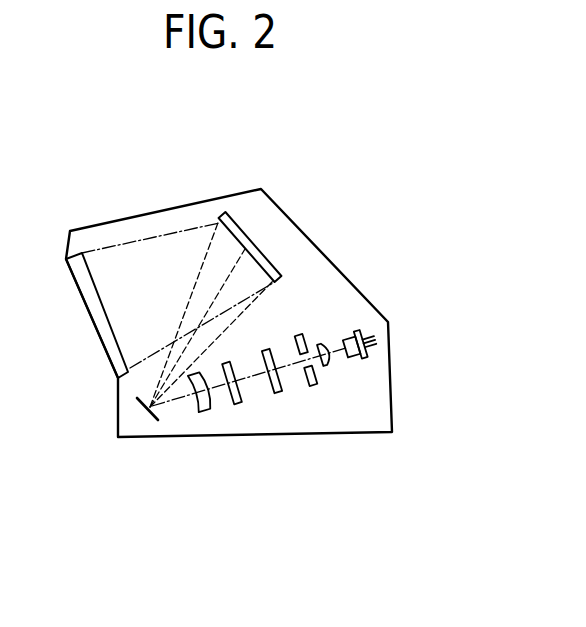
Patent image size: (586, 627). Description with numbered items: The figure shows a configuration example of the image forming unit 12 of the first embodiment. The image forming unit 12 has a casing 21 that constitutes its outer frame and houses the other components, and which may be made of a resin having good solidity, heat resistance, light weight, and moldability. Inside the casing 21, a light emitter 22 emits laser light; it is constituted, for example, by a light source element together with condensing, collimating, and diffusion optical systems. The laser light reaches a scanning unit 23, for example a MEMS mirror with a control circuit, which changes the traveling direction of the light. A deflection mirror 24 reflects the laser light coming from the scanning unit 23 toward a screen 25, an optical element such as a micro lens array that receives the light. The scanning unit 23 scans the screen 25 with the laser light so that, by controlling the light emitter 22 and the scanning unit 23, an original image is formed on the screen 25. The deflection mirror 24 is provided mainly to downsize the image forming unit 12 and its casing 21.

The image forming unit 12 is at (245, 161).
The casing 21 is at (343, 272).
The light emitter 22 is at (283, 408).
The scanning unit 23 is at (152, 418).
The deflection mirror 24 is at (245, 234).
The screen 25 is at (105, 360).